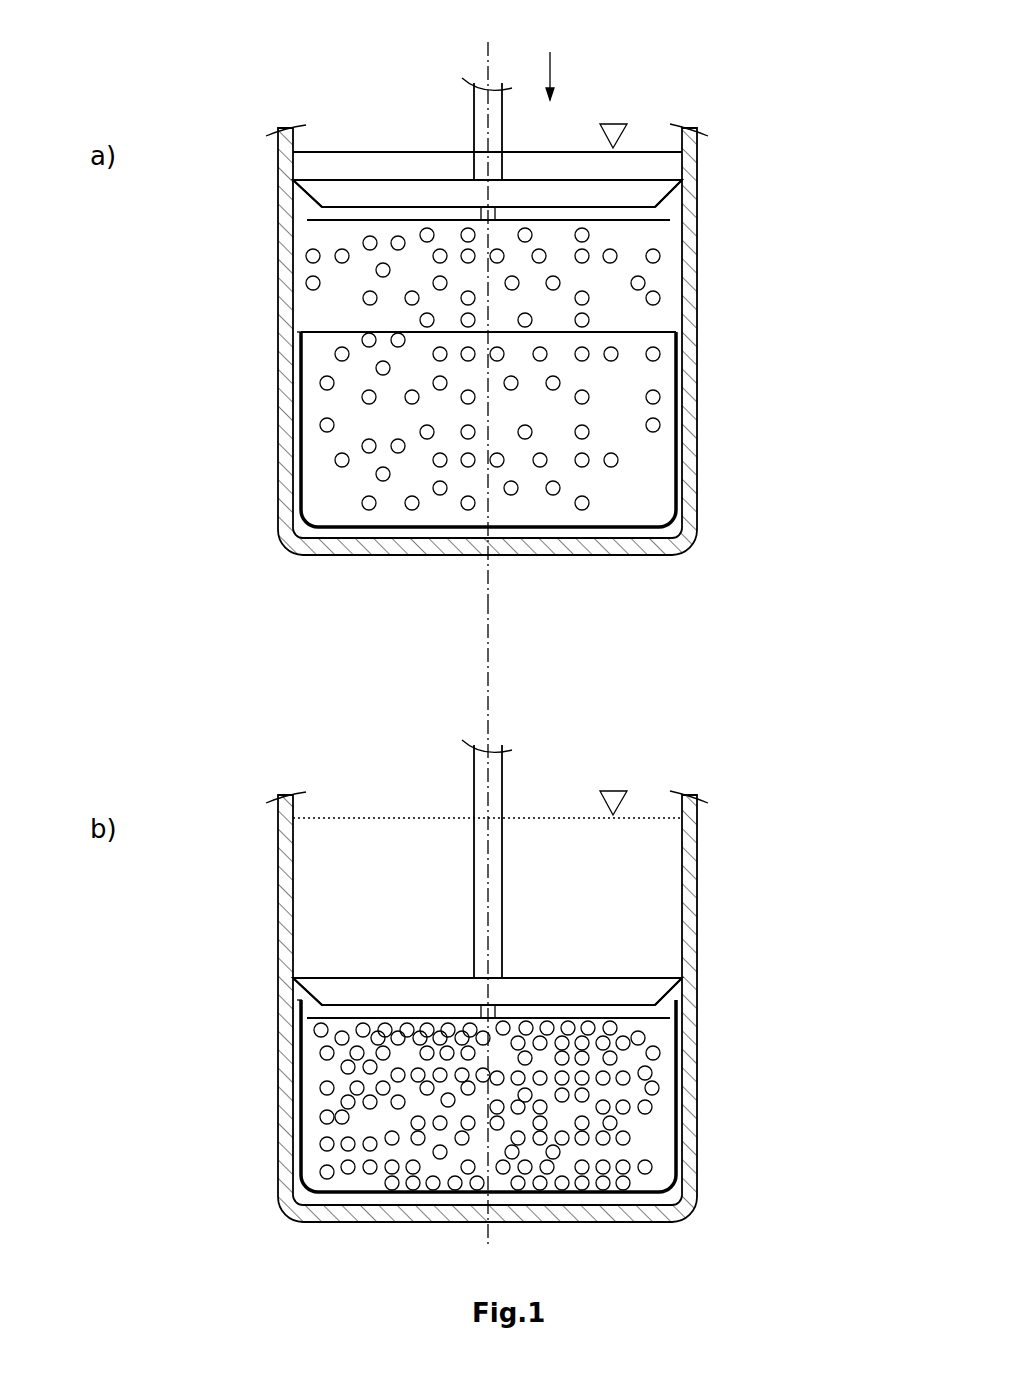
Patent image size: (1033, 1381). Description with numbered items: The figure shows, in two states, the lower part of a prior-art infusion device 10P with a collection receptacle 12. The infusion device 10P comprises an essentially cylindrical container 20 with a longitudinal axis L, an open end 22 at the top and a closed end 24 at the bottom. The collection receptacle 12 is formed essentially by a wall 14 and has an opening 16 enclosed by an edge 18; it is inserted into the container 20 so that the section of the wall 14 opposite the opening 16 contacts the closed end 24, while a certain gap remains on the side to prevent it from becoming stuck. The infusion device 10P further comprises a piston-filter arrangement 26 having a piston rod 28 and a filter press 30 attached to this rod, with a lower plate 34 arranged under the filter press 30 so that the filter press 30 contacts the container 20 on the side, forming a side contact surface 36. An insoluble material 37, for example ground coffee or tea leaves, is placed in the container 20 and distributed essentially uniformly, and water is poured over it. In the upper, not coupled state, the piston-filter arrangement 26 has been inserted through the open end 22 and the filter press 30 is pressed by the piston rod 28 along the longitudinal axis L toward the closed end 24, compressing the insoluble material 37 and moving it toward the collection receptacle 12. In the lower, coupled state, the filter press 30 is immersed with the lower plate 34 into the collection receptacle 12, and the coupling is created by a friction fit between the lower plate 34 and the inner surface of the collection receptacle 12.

In FIG. 1a, the infusion device 10P is at (168, 85).
In FIG. 1b, the infusion device 10P is at (168, 753).
In FIG. 1a, the collection receptacle 12 is at (306, 415).
In FIG. 1b, the collection receptacle 12 is at (306, 1082).
In FIG. 1a, the wall 14 is at (423, 429).
In FIG. 1b, the wall 14 is at (423, 1096).
In FIG. 1a, the opening 16 is at (337, 325).
In FIG. 1a, the edge 18 is at (296, 333).
In FIG. 1b, the edge 18 is at (296, 999).
In FIG. 1a, the container 20 is at (278, 236).
In FIG. 1b, the container 20 is at (278, 901).
In FIG. 1a, the open end 22 is at (663, 100).
In FIG. 1b, the open end 22 is at (663, 768).
In FIG. 1a, the closed end 24 is at (662, 580).
In FIG. 1b, the closed end 24 is at (662, 1248).
In FIG. 1a, the piston-filter arrangement 26 is at (487, 129).
In FIG. 1b, the piston-filter arrangement 26 is at (487, 872).
In FIG. 1a, the piston rod 28 is at (472, 86).
In FIG. 1b, the piston rod 28 is at (472, 803).
In FIG. 1a, the filter press 30 is at (375, 190).
In FIG. 1b, the filter press 30 is at (375, 990).
In FIG. 1a, the lower plate 34 is at (648, 222).
In FIG. 1b, the lower plate 34 is at (648, 1020).
In FIG. 1a, the side contact surface 36 is at (281, 181).
In FIG. 1b, the side contact surface 36 is at (293, 979).
In FIG. 1a, the insoluble material 37 is at (660, 296).
In FIG. 1b, the insoluble material 37 is at (660, 1090).
In FIG. 1a, the longitudinal axis L is at (487, 680).